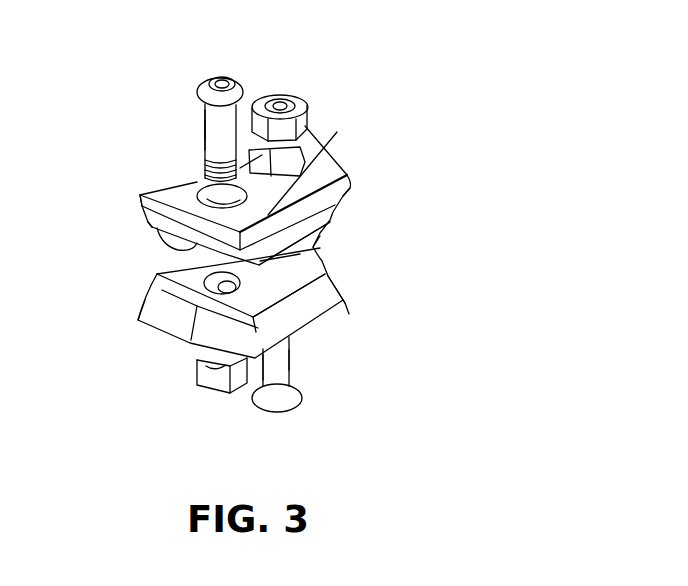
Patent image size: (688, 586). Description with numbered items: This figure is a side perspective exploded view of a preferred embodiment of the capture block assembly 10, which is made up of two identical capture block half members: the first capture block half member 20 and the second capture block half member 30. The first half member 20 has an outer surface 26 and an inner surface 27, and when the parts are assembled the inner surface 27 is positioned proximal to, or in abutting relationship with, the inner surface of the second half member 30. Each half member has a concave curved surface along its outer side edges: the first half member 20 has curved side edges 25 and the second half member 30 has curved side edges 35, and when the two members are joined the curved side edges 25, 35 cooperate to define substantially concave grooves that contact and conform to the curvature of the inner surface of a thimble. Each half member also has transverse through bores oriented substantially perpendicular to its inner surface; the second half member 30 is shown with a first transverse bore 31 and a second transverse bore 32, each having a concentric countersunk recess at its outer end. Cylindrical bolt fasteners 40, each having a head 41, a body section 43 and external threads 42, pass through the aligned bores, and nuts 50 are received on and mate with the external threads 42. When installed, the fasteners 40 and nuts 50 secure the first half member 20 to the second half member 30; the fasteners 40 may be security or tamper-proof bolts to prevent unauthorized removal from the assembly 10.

The capture block assembly 10 is at (390, 203).
The first capture block half member 20 is at (343, 217).
The curved side edges 25 is at (350, 197).
The outer surface 26 is at (337, 132).
The inner surface 27 is at (318, 237).
The second capture block half member 30 is at (308, 306).
The first transverse bore 31 is at (289, 310).
The second transverse bore 32 is at (333, 253).
The curved side edges 35 is at (326, 270).
The cylindrical bolt fastener 40 is at (190, 124).
The head 41 is at (240, 90).
The external threads 42 is at (200, 172).
The body section 43 is at (215, 140).
The nut 50 is at (297, 98).